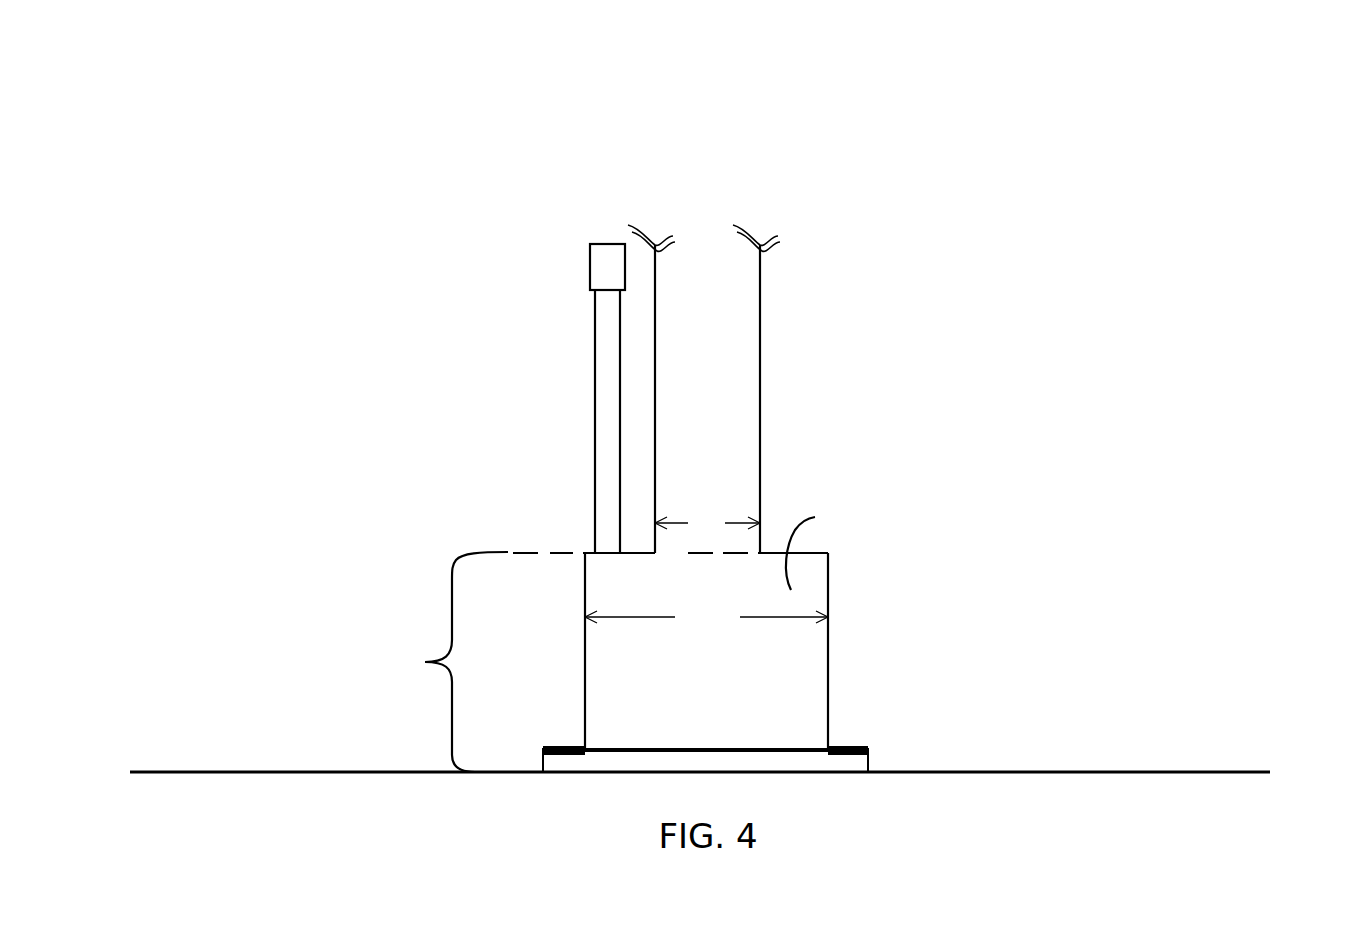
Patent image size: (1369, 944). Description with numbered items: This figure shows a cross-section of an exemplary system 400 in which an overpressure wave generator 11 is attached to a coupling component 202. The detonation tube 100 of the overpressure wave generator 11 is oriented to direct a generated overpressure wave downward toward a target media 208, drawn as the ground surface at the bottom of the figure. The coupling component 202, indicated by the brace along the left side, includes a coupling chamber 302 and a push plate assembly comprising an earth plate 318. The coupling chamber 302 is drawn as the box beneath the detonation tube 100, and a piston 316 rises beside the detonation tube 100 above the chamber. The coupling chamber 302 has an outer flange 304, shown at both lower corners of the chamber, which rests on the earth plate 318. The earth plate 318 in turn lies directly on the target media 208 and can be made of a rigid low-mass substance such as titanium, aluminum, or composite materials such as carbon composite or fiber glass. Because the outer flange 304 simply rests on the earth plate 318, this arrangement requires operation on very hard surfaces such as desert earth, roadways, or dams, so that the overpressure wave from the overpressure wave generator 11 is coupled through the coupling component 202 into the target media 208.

The system 400 is at (726, 36).
The overpressure wave generator 11 is at (770, 187).
The detonation tube 100 is at (762, 482).
The piston 316 is at (592, 340).
The coupling chamber 302 is at (828, 593).
The outer flange 304 is at (542, 745).
The earth plate 318 is at (668, 749).
The coupling component 202 is at (425, 662).
The target media 208 is at (245, 807).